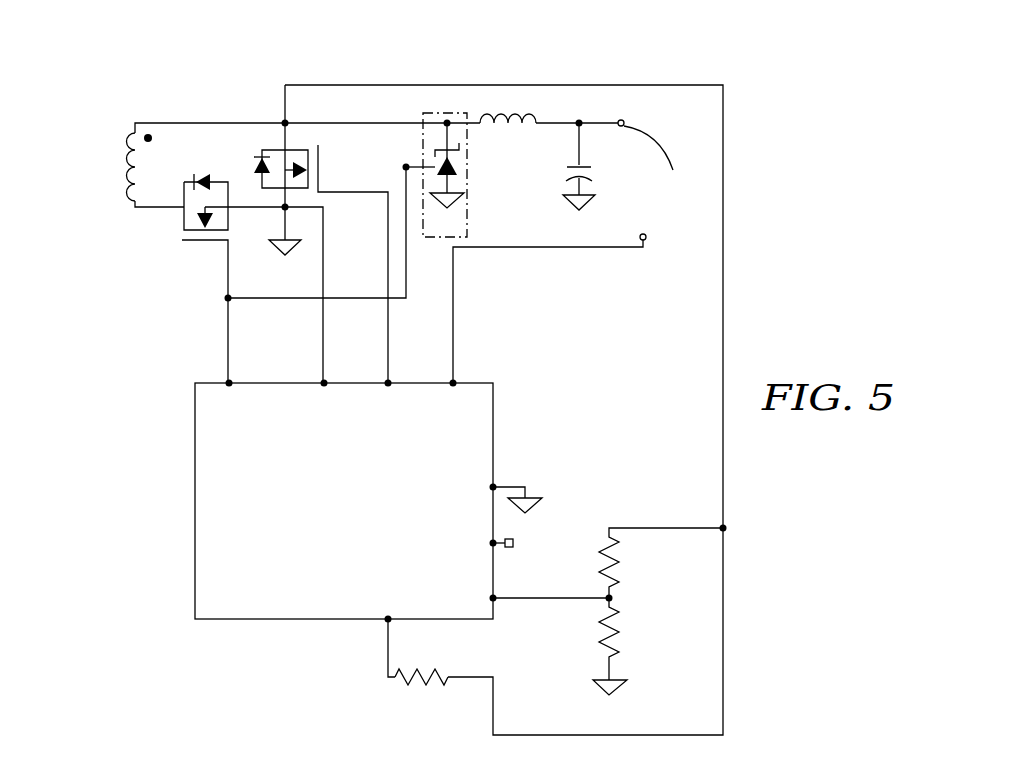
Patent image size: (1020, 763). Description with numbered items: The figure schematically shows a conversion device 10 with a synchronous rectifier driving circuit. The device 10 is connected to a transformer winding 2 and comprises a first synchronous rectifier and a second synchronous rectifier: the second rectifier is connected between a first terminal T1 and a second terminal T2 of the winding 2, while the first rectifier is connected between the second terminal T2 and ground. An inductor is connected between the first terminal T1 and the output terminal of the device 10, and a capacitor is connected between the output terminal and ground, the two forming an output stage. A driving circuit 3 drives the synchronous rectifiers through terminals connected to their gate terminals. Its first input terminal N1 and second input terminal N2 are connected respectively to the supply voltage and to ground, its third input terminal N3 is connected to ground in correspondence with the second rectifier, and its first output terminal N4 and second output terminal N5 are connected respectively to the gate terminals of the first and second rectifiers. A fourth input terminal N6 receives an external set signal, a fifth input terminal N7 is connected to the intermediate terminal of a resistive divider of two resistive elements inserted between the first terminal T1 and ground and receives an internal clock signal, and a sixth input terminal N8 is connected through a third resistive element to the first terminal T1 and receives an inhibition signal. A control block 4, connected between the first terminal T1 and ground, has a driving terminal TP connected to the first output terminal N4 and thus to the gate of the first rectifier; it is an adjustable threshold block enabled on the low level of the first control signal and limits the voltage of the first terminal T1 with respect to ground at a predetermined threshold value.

The conversion device 10 is at (106, 84).
The transformer winding 2 is at (122, 130).
The driving circuit 3 is at (220, 548).
The control block 4 is at (450, 113).
The first terminal T1 is at (145, 123).
The second terminal T2 is at (133, 208).
The driving terminal TP is at (404, 167).
The first input terminal N1 is at (457, 382).
The second input terminal N2 is at (497, 486).
The third input terminal N3 is at (327, 382).
The first output terminal N4 is at (226, 381).
The second output terminal N5 is at (392, 382).
The fourth input terminal N6 is at (499, 545).
The fifth input terminal N7 is at (498, 600).
The sixth input terminal N8 is at (384, 621).